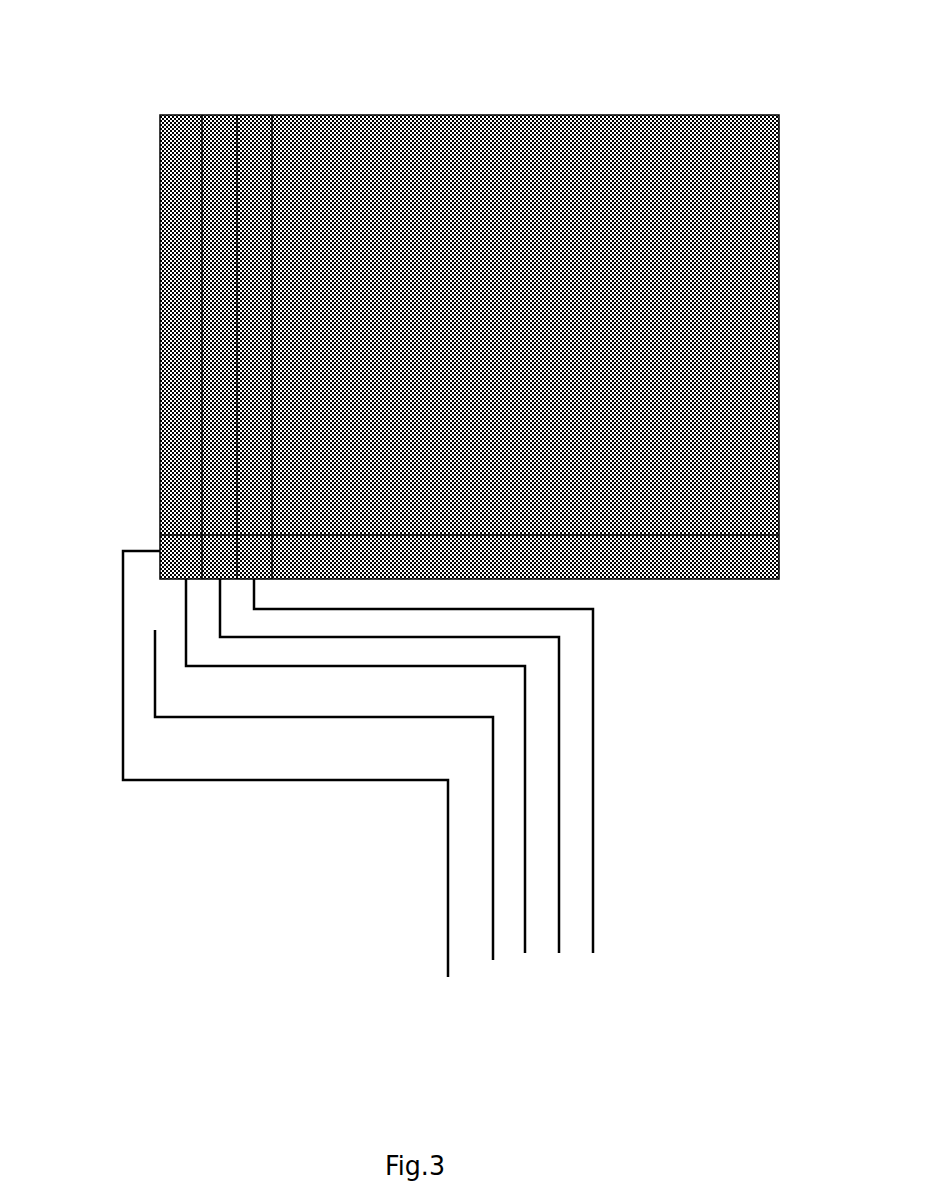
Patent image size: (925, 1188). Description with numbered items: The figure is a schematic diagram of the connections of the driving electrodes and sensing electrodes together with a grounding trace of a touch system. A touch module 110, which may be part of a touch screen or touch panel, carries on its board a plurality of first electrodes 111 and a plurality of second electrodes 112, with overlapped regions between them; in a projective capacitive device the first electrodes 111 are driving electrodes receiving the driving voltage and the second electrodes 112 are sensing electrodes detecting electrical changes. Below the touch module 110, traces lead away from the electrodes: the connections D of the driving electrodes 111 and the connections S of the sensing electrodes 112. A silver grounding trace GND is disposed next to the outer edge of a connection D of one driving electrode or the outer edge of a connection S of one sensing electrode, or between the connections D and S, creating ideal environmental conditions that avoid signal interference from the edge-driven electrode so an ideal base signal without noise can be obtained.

The touch module 110 is at (182, 124).
The first electrodes 111 is at (743, 535).
The second electrodes 112 is at (200, 270).
The connections of the sensing electrodes S is at (448, 810).
The grounding trace GND is at (493, 898).
The connections of the driving electrodes D is at (614, 948).